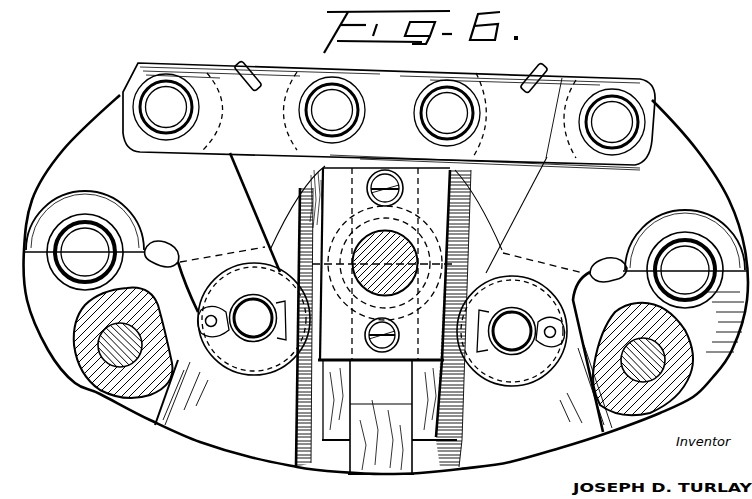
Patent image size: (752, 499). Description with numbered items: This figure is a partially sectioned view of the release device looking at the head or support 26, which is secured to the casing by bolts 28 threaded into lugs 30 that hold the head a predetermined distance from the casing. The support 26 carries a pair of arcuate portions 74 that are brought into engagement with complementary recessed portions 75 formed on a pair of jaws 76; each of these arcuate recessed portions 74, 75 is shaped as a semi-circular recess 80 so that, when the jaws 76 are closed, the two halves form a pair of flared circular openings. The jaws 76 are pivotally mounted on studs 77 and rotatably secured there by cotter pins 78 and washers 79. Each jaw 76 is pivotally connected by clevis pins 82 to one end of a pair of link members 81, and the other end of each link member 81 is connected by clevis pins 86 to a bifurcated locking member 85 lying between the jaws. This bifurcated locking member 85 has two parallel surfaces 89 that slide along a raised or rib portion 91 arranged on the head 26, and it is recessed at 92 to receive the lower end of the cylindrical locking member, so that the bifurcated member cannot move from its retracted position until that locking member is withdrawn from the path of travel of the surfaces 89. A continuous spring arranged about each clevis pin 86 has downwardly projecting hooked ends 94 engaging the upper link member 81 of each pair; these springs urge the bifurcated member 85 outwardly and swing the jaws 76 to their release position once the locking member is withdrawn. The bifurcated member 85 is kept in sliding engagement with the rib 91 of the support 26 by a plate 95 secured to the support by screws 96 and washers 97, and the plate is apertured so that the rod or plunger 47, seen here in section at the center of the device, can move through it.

The head or support 26 is at (258, 452).
The bolts 28 is at (84, 376).
The lugs 30 is at (114, 395).
The rod or plunger 47 is at (362, 294).
The arcuate portions 74 is at (96, 278).
The recessed portions 75 is at (96, 222).
The jaws 76 is at (389, 131).
The studs 77 is at (383, 325).
The cotter pins 78 is at (204, 362).
The washers 79 is at (236, 378).
The semi-circular recess 80 is at (60, 254).
The link members 81 is at (226, 72).
The clevis pins 82 is at (389, 114).
The bifurcated locking member 85 is at (394, 98).
The clevis pins 86 is at (389, 111).
The parallel surfaces 89 is at (362, 403).
The raised or rib portion 91 is at (352, 465).
The recess 92 is at (381, 263).
The hooked ends 94 is at (247, 66).
The plate 95 is at (460, 168).
The screws 96 is at (402, 191).
The washers 97 is at (368, 192).